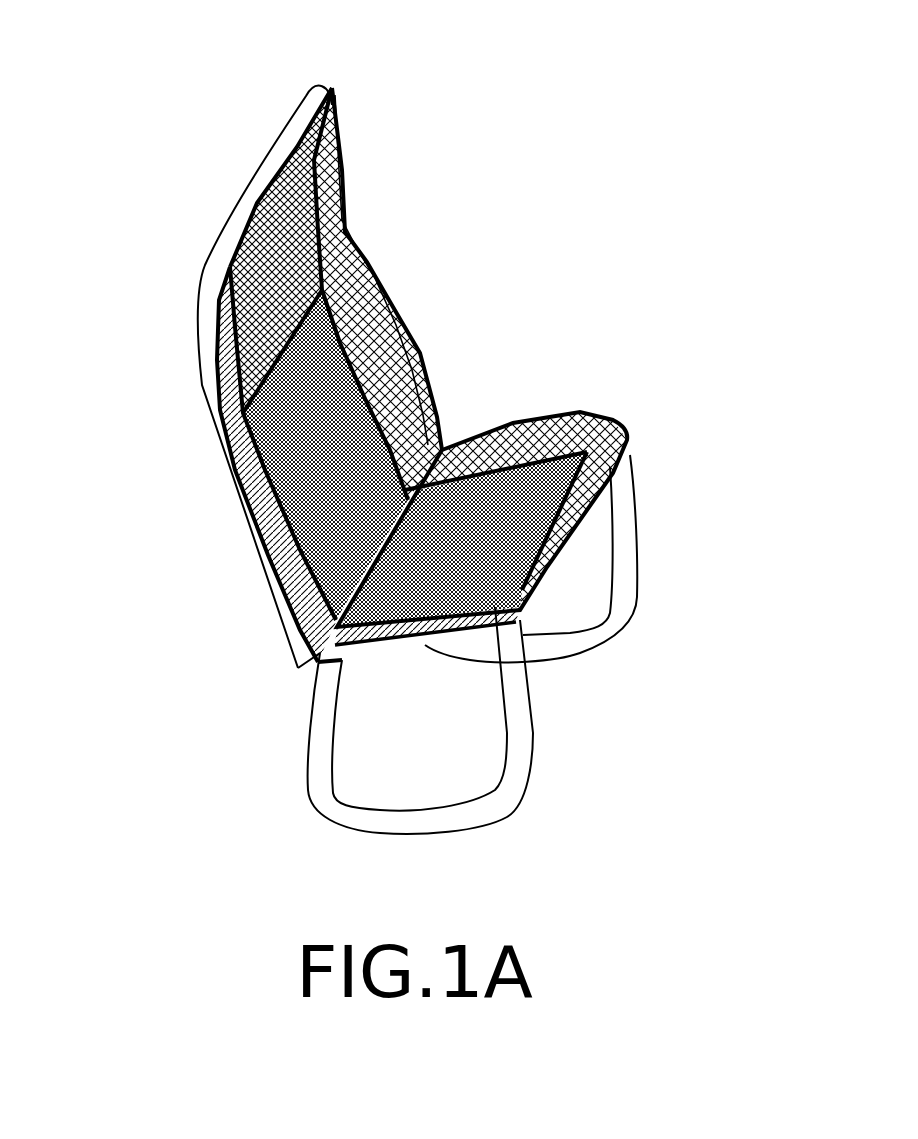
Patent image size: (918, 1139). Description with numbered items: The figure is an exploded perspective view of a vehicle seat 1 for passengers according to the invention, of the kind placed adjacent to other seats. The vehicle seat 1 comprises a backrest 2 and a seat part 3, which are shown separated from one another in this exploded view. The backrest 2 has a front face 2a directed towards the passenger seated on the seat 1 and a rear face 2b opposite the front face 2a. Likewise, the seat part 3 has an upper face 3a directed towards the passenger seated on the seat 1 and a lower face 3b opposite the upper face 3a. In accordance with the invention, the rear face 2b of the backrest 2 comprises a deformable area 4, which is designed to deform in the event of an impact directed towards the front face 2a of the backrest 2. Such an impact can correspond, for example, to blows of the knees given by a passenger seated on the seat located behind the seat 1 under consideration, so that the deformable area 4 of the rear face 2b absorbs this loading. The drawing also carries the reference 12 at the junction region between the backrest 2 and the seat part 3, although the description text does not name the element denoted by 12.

The vehicle seat 1 is at (423, 452).
The backrest 2 is at (308, 331).
The front face 2a is at (370, 300).
The rear face 2b is at (273, 603).
The seat part 3 is at (574, 455).
The upper face 3a is at (590, 410).
The lower face 3b is at (570, 555).
The deformable area 4 is at (240, 517).
The frame joint 12 is at (297, 670).